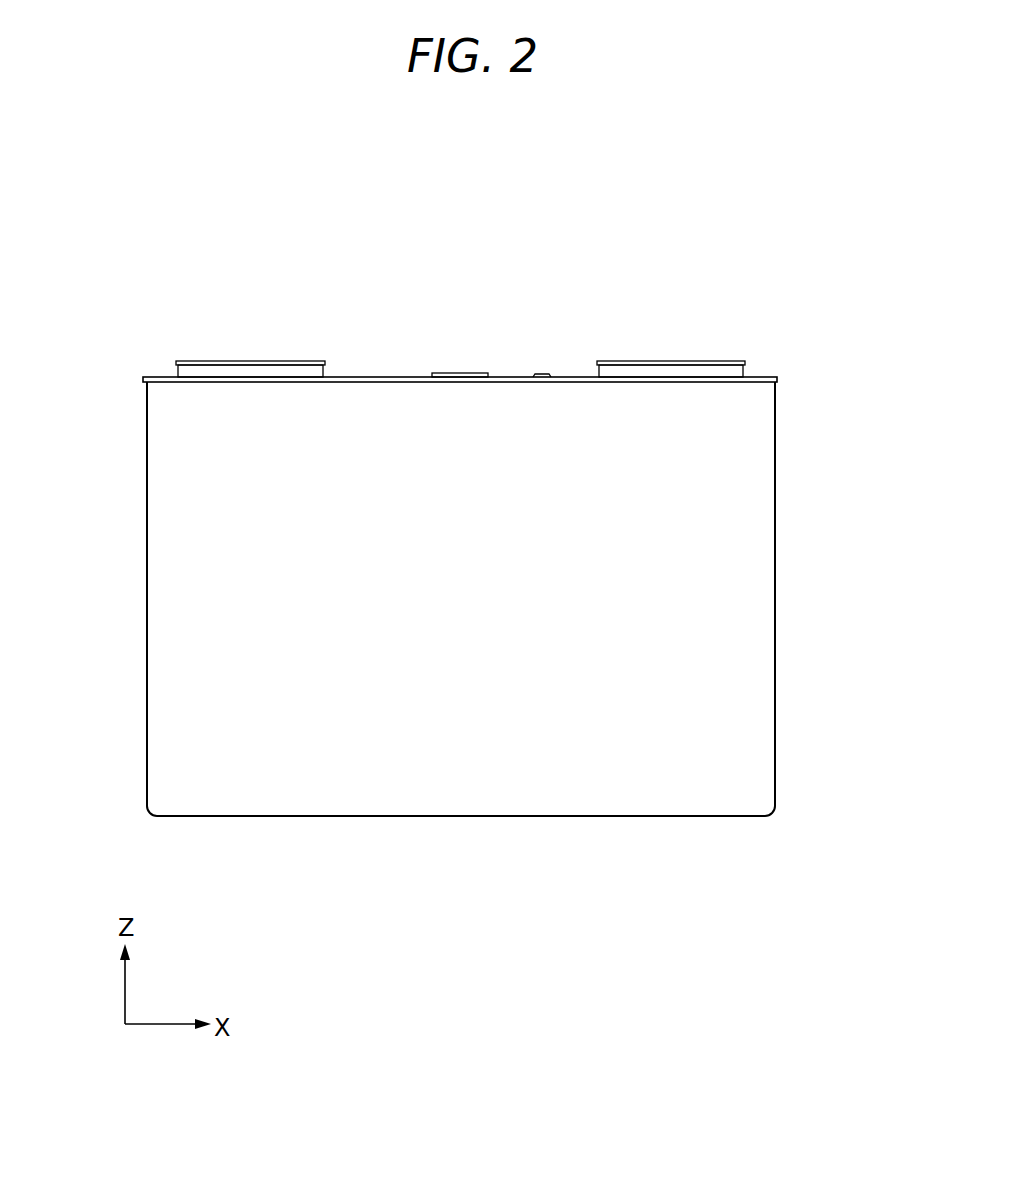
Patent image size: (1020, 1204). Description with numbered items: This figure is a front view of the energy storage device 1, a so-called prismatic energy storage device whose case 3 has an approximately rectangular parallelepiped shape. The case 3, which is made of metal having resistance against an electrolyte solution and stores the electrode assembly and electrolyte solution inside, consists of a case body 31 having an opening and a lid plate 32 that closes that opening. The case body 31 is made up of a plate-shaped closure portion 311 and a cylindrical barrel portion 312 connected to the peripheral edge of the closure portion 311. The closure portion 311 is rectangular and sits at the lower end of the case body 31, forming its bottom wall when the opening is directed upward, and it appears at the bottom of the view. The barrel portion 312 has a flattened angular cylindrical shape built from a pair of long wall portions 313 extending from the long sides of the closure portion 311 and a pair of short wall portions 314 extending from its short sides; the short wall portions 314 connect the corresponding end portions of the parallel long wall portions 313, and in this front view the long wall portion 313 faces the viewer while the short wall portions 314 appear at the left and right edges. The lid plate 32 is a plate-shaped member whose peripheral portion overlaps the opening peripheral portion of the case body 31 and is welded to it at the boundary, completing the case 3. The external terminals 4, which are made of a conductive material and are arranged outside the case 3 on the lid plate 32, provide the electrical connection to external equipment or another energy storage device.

The energy storage device 1 is at (778, 234).
The case 3 is at (882, 423).
The external terminals 4 is at (247, 361).
The case body 31 is at (765, 540).
The lid plate 32 is at (762, 372).
The closure portion 311 is at (552, 817).
The barrel portion 312 is at (790, 693).
The long wall portions 313 is at (177, 690).
The short wall portions 314 is at (147, 593).